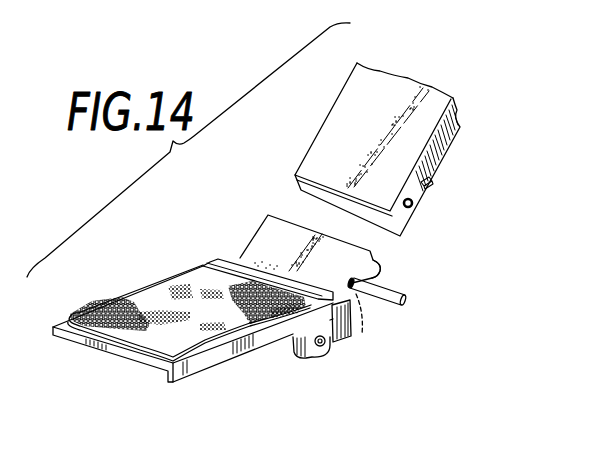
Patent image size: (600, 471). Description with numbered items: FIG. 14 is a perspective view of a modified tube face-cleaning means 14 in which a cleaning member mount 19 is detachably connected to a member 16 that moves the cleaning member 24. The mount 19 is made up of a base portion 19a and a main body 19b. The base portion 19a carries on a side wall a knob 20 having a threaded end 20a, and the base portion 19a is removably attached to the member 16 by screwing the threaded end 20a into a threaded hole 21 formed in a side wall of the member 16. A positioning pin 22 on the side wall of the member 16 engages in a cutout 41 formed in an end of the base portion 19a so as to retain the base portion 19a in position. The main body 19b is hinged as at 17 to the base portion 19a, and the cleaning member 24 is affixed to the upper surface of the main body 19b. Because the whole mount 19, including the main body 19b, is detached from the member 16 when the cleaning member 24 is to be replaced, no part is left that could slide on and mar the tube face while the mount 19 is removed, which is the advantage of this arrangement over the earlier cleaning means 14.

The cleaning means 14 is at (288, 168).
The member 16 is at (340, 123).
The hinge 17 is at (323, 348).
The cleaning member mount 19 is at (53, 312).
The base portion 19a is at (333, 253).
The main body 19b is at (147, 360).
The knob 20 is at (404, 301).
The threaded end 20a is at (354, 291).
The threaded hole 21 is at (411, 206).
The positioning pin 22 is at (433, 181).
The cleaning member 24 is at (197, 334).
The cutout 41 is at (376, 262).